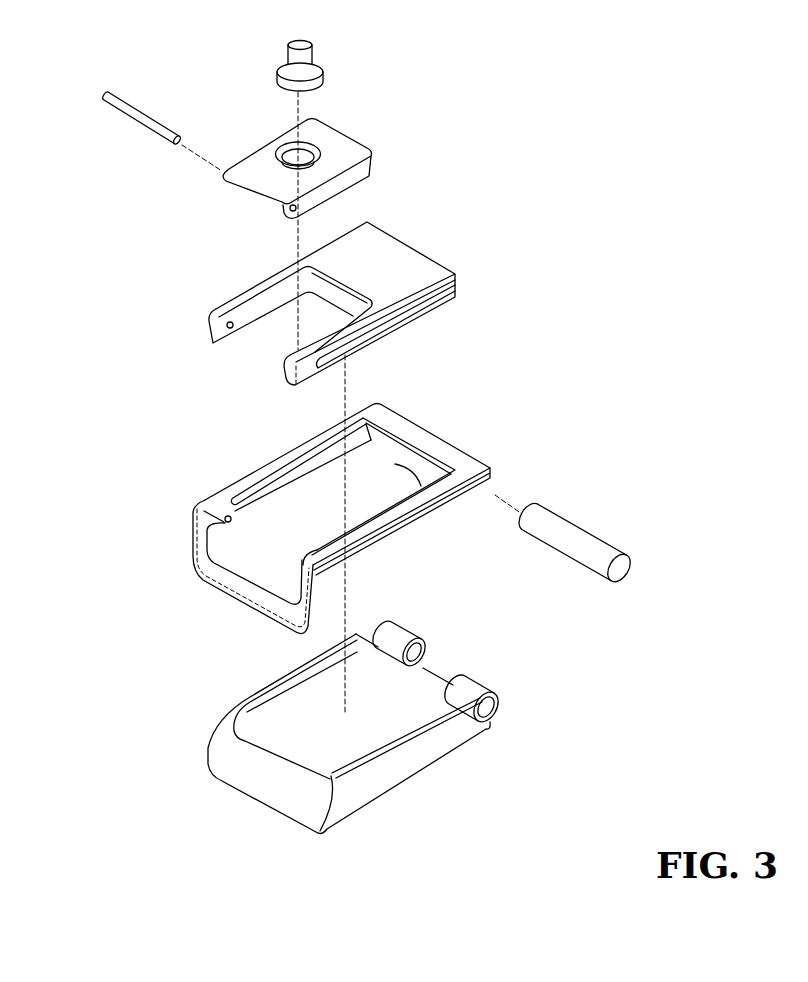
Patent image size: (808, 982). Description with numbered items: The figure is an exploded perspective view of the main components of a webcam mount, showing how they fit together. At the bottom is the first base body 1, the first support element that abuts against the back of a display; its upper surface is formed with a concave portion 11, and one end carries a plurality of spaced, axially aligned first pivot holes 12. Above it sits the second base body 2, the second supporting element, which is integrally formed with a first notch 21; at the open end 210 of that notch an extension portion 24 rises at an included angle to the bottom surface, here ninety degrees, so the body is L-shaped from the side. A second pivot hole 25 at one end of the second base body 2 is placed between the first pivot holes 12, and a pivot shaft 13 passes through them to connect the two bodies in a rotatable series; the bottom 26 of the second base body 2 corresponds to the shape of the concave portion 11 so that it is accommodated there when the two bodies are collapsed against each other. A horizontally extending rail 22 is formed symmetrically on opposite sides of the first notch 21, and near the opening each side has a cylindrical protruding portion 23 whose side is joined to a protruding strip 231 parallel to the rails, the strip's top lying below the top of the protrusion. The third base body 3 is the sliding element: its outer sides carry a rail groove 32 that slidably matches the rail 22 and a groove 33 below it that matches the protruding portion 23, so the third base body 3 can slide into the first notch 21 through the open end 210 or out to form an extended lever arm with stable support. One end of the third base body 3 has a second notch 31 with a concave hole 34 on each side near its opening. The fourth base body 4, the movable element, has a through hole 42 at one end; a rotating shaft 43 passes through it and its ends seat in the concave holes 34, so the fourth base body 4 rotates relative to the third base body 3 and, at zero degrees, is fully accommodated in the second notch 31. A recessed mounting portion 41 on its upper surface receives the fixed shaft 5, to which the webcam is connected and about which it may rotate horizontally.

The first base body 1 is at (398, 732).
The concave portion 11 is at (300, 749).
The first pivot holes 12 is at (492, 705).
The pivot shaft 13 is at (597, 553).
The second base body 2 is at (362, 519).
The first notch 21 is at (357, 497).
The rail 22 is at (280, 472).
The protruding portion 23 is at (227, 516).
The protruding strip 231 is at (310, 450).
The extension portion 24 is at (263, 600).
The second pivot hole 25 is at (413, 480).
The bottom 26 is at (357, 557).
The open end 210 is at (233, 553).
The third base body 3 is at (314, 285).
The second notch 31 is at (285, 332).
The rail groove 32 is at (455, 281).
The groove 33 is at (385, 332).
The concave hole 34 is at (222, 325).
The fourth base body 4 is at (316, 144).
The mounting portion 41 is at (294, 152).
The through hole 42 is at (298, 208).
The rotating shaft 43 is at (130, 107).
The fixed shaft 5 is at (305, 47).